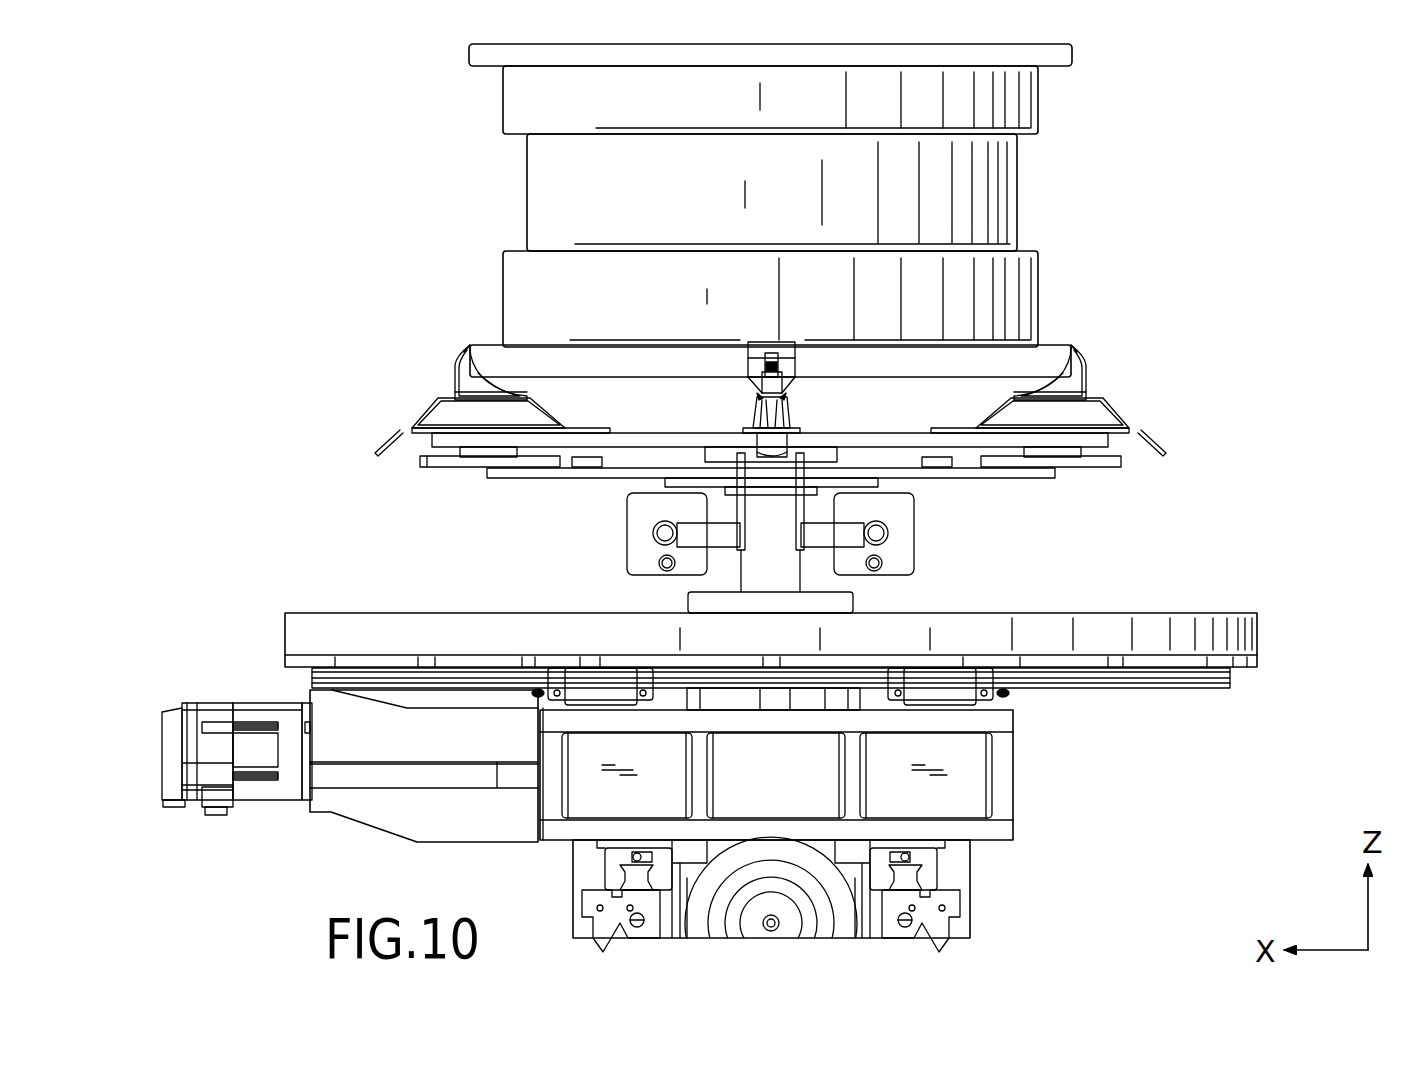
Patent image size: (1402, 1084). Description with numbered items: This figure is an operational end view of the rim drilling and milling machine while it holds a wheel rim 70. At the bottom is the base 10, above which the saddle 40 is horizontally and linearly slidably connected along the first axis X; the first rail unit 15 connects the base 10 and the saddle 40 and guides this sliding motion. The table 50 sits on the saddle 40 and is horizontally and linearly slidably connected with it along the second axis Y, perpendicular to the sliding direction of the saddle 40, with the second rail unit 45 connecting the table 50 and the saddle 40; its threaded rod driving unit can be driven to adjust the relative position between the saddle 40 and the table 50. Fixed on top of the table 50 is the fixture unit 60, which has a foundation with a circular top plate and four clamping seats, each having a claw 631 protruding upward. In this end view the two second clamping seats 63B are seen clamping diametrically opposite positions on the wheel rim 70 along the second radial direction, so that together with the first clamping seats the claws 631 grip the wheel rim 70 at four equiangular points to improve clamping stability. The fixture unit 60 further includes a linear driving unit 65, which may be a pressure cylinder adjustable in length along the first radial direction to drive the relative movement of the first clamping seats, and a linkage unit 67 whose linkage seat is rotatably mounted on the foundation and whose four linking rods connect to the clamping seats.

The base 10 is at (819, 897).
The first rail unit 15 is at (955, 862).
The saddle 40 is at (1028, 793).
The second rail unit 45 is at (1117, 698).
The table 50 is at (390, 600).
The fixture unit 60 is at (824, 373).
The second clamping seat 63B is at (445, 378).
The claw 631 is at (465, 347).
The linear driving unit 65 is at (930, 543).
The linkage unit 67 is at (983, 487).
The wheel rim 70 is at (500, 192).